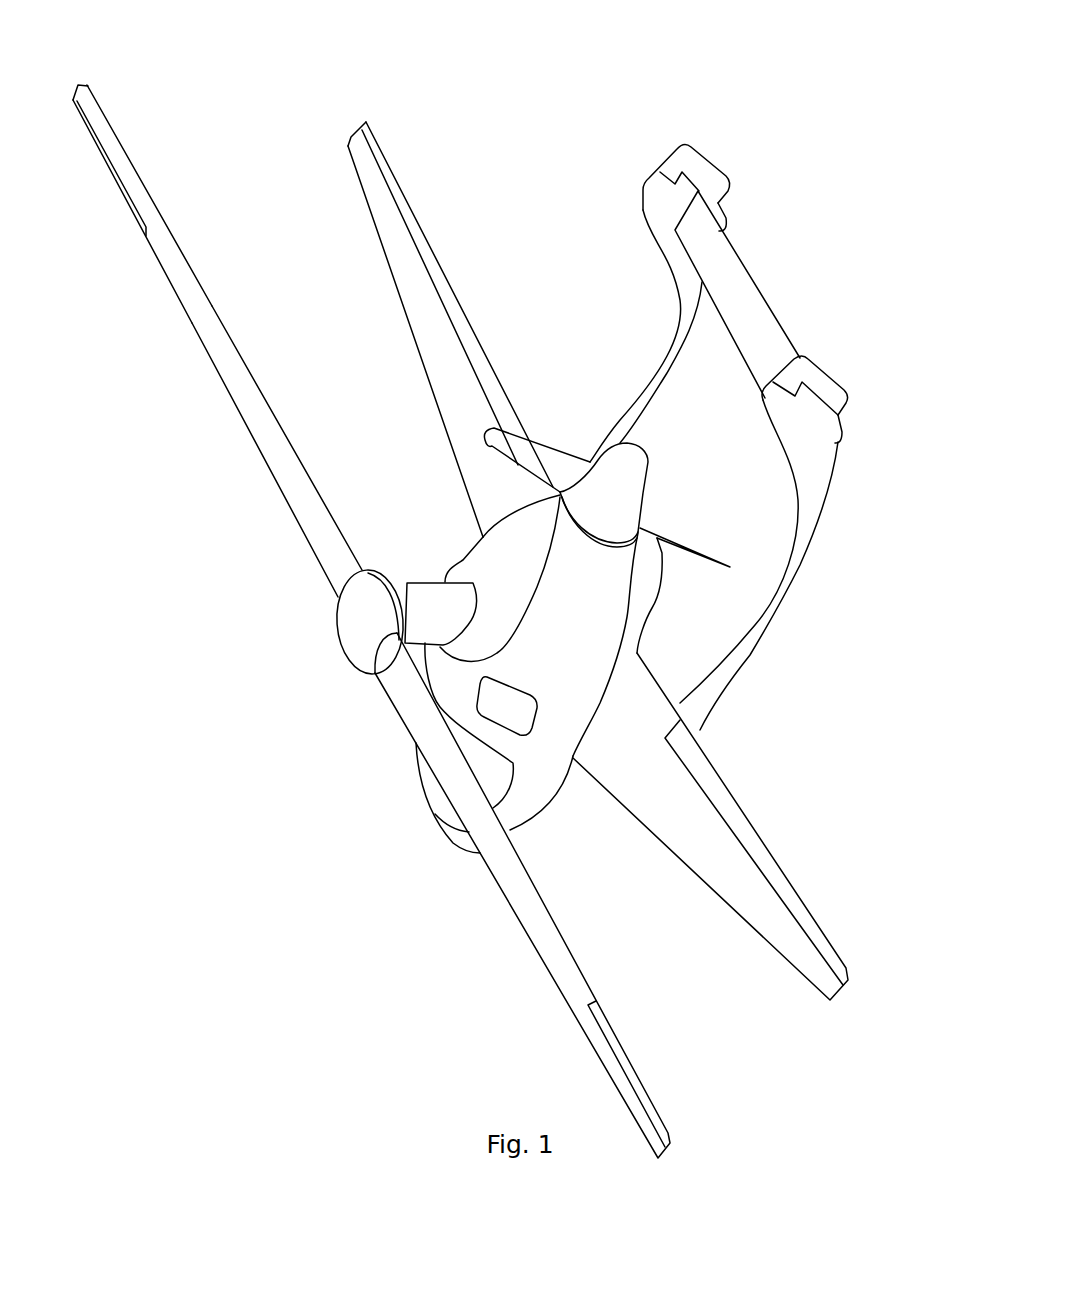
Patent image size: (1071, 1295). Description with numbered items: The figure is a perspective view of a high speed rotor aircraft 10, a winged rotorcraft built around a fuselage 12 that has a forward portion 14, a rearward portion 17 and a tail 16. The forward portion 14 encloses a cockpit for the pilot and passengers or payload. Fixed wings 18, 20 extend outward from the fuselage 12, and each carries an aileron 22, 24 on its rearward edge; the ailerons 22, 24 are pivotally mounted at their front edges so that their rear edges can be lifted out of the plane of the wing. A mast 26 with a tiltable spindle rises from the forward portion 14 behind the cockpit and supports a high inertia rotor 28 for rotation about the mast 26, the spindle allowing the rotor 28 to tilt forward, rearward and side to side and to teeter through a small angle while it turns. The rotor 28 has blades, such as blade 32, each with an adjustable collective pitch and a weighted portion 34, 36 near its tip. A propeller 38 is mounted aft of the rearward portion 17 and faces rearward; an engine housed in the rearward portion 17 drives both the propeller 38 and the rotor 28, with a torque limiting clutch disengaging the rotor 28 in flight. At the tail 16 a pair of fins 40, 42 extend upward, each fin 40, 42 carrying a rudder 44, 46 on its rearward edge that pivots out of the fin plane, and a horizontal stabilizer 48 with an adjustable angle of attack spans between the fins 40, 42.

The high speed rotor aircraft 10 is at (328, 674).
The fuselage 12 is at (527, 748).
The forward portion 14 is at (523, 827).
The tail 16 is at (663, 370).
The rearward portion 17 is at (585, 605).
The fixed wing 18 is at (722, 855).
The fixed wing 20 is at (428, 327).
The aileron 22 is at (797, 903).
The aileron 24 is at (393, 190).
The mast 26 is at (430, 600).
The high inertia rotor 28 is at (258, 410).
The blade 32 is at (195, 303).
The weighted portion 34 is at (533, 913).
The weighted portion 36 is at (122, 193).
The propeller 38 is at (560, 455).
The fin 40 is at (810, 428).
The fin 42 is at (658, 193).
The rudder 44 is at (827, 388).
The rudder 46 is at (698, 172).
The horizontal stabilizer 48 is at (747, 320).